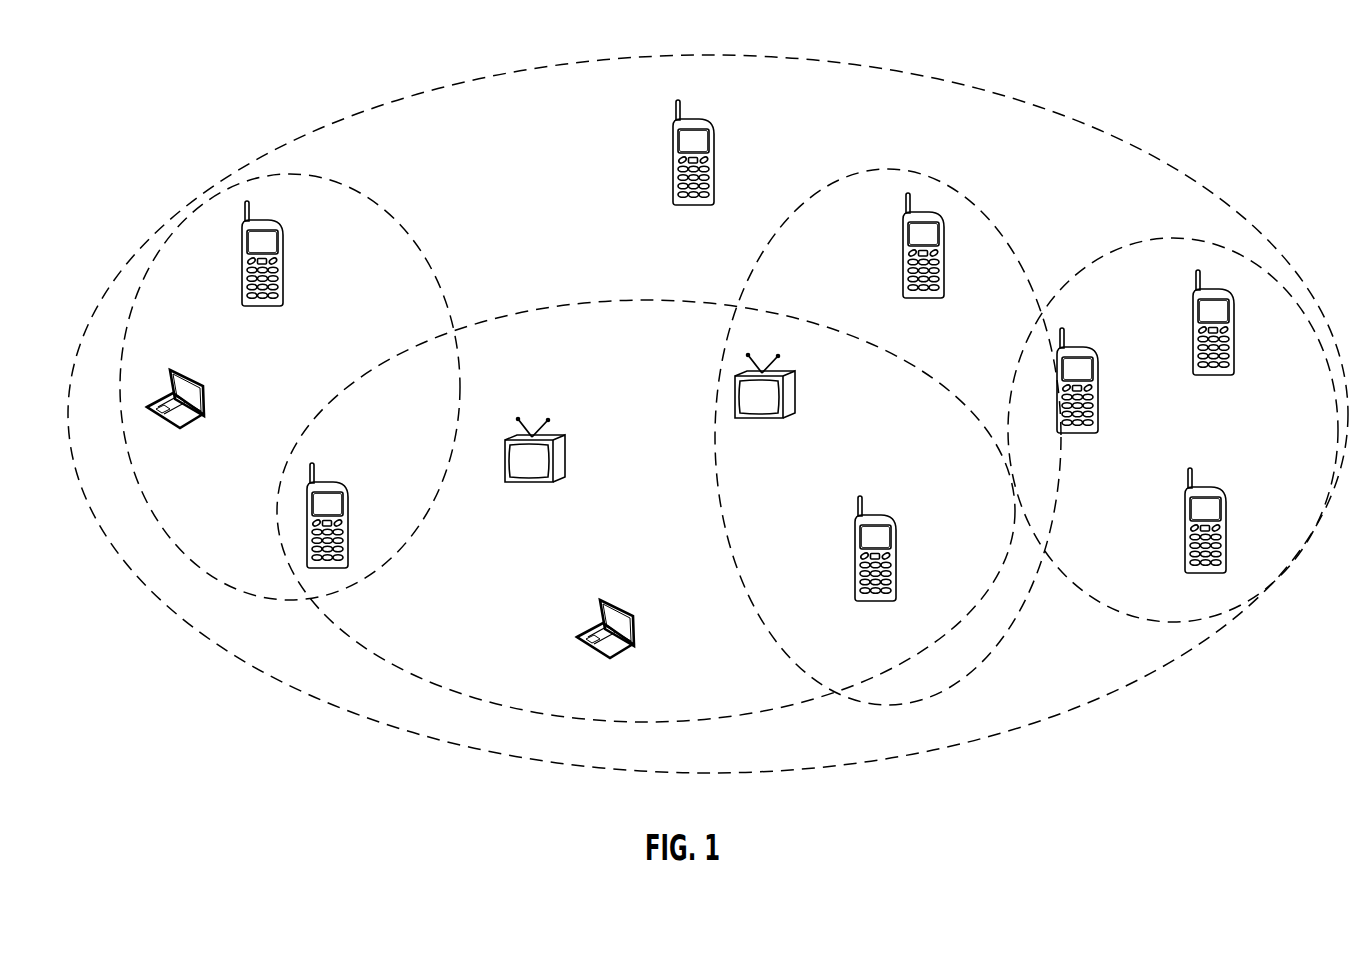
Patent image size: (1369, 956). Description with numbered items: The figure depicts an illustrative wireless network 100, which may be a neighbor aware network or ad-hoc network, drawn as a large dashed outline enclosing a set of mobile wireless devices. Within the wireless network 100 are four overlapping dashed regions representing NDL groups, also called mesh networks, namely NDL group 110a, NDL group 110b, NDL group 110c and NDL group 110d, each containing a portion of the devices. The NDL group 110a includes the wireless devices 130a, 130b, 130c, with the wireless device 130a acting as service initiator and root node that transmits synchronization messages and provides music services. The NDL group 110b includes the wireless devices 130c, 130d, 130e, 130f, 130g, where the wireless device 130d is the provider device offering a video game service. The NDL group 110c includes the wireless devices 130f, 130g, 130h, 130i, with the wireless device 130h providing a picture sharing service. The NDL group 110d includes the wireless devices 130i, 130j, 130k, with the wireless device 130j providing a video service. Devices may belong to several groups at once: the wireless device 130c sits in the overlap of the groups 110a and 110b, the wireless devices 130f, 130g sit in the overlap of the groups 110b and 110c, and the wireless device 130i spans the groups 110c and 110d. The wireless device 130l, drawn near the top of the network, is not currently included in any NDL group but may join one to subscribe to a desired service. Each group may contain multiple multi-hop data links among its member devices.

The wireless network 100 is at (387, 117).
The NDL group 110a is at (353, 187).
The NDL group 110b is at (557, 307).
The NDL group 110c is at (847, 180).
The NDL group 110d is at (1202, 233).
The wireless device 130a is at (206, 399).
The wireless device 130b is at (286, 269).
The wireless device 130c is at (338, 507).
The wireless device 130d is at (530, 465).
The wireless device 130e is at (612, 645).
The wireless device 130f is at (768, 407).
The wireless device 130g is at (886, 564).
The wireless device 130h is at (936, 263).
The wireless device 130i is at (1086, 394).
The wireless device 130j is at (1225, 338).
The wireless device 130k is at (1218, 533).
The wireless device 130l is at (689, 170).